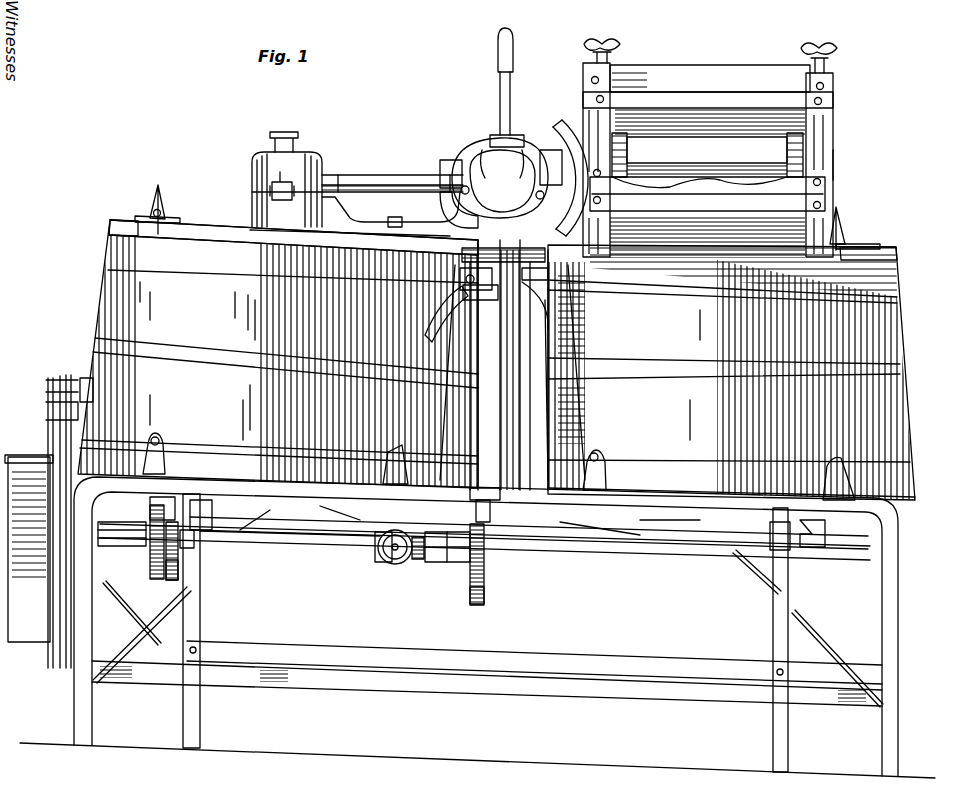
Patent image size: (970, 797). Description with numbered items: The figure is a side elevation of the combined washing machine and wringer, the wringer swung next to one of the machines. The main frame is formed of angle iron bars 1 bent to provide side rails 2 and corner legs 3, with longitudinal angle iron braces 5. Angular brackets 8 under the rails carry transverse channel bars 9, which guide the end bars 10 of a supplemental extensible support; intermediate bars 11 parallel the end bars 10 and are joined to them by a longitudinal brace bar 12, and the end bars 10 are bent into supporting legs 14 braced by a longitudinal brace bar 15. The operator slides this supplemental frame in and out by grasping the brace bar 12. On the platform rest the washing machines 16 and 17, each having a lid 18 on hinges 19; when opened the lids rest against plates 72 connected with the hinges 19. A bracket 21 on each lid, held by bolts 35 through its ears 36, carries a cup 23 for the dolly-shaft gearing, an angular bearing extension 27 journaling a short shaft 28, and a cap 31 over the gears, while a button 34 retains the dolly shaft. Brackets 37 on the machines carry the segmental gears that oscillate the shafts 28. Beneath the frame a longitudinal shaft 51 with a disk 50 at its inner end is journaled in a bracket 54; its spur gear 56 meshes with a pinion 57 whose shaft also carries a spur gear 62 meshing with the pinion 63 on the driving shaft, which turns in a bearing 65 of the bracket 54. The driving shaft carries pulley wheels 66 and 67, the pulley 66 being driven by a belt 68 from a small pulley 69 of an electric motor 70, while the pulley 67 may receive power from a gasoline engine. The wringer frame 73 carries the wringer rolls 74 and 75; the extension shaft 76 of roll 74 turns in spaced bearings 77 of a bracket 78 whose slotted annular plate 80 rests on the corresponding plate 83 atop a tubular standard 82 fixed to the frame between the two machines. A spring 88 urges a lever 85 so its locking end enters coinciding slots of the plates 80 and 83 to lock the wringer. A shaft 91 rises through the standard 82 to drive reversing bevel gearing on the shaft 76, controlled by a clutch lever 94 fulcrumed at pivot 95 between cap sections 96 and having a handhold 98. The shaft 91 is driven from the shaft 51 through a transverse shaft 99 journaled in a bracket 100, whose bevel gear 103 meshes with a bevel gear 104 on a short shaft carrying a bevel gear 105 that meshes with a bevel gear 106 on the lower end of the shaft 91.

The angle iron bars 1 is at (93, 614).
The side rails 2 is at (640, 503).
The corner legs 3 is at (74, 712).
The angle iron braces 5 is at (672, 700).
The angular brackets 8 is at (176, 496).
The channel bars 9 is at (208, 500).
The end bars 10 is at (203, 498).
The intermediate bars 11 is at (420, 522).
The longitudinal brace bar 12 is at (306, 538).
The supporting legs 14 is at (200, 712).
The longitudinal brace bar 15 is at (684, 662).
The washing machine 16 is at (278, 354).
The washing machine 17 is at (731, 372).
The lid or cover 18 is at (509, 223).
The hinges 19 is at (136, 216).
The bracket 21 is at (395, 220).
The cup 23 is at (207, 228).
The angular bearing extension 27 is at (352, 178).
The short shaft 28 is at (388, 175).
The cap or cover 31 is at (316, 156).
The button 34 is at (285, 132).
The bolts 35 is at (350, 240).
The ears 36 is at (390, 220).
The brackets 37 is at (572, 318).
The disk 50 is at (474, 608).
The shaft 51 is at (334, 545).
The bracket 54 is at (135, 616).
The spur gear 56 is at (175, 560).
The pinion 57 is at (178, 540).
The spur gear 62 is at (172, 560).
The pinion 63 is at (157, 545).
The bearing 65 is at (122, 522).
The pulley wheel 66 is at (50, 434).
The pulley wheel 67 is at (26, 548).
The belt 68 is at (48, 412).
The small pulley wheel 69 is at (48, 385).
The electric motor 70 is at (84, 378).
The plates or rests 72 is at (160, 193).
The wringer frame 73 is at (836, 164).
The wringer roll 74 is at (782, 178).
The wringer roll 75 is at (672, 155).
The extension shaft 76 is at (576, 155).
The spaced bearings 77 is at (448, 160).
The bracket 78 is at (443, 210).
The annular plate or flange 80 is at (560, 270).
The tubular support or standard 82 is at (546, 385).
The annular plate or flange 83 is at (552, 292).
The lever 85 is at (452, 340).
The spring 88 is at (484, 297).
The shaft 91 is at (476, 491).
The lever 94 is at (500, 96).
The pivot 95 is at (492, 137).
The cap sections 96 is at (500, 178).
The handhold 98 is at (498, 46).
The transversely disposed shaft 99 is at (394, 565).
The bracket 100 is at (447, 564).
The bevel gear 103 is at (380, 564).
The bevel gear 104 is at (418, 562).
The bevel gear 105 is at (486, 560).
The bevel gear 106 is at (492, 512).